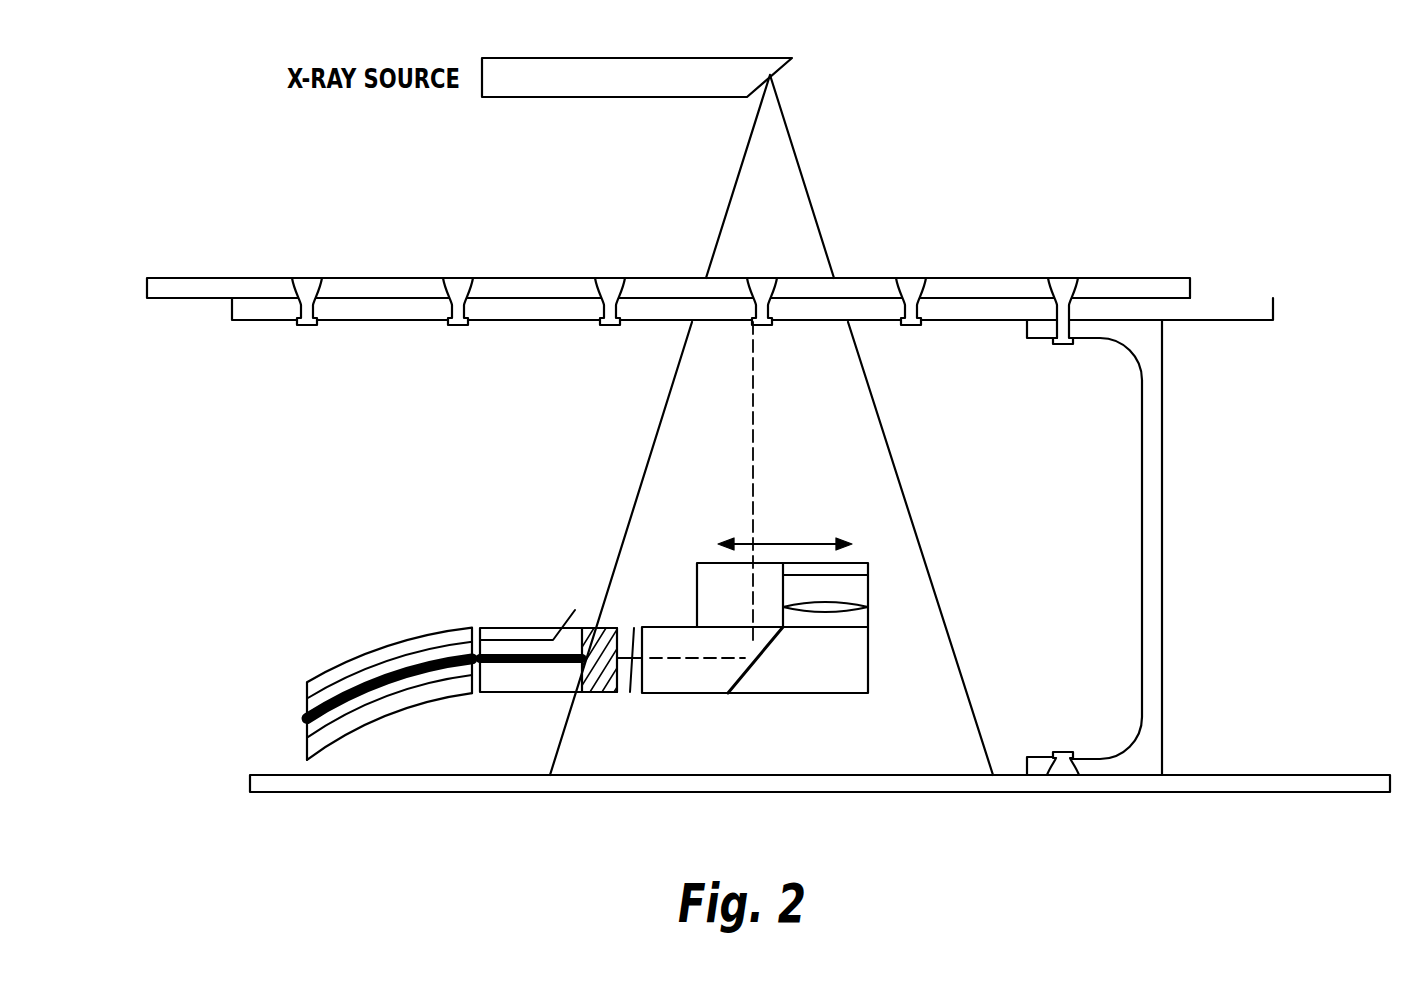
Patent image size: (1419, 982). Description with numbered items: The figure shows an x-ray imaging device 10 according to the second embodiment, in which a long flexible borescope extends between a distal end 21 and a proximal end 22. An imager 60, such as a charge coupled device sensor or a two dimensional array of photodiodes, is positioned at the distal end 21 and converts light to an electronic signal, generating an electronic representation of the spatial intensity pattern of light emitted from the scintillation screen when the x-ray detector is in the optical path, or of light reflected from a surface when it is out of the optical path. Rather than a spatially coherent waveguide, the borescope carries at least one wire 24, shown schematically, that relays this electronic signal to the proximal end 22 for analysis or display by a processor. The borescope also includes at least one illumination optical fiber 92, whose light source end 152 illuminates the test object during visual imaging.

The x-ray imaging device 10 is at (372, 563).
The illumination optical fiber 92 is at (390, 655).
The light source end 152 is at (575, 610).
The imager 60 is at (598, 627).
The wire 24 is at (375, 676).
The distal end 21 is at (470, 680).
The proximal end 22 is at (325, 729).